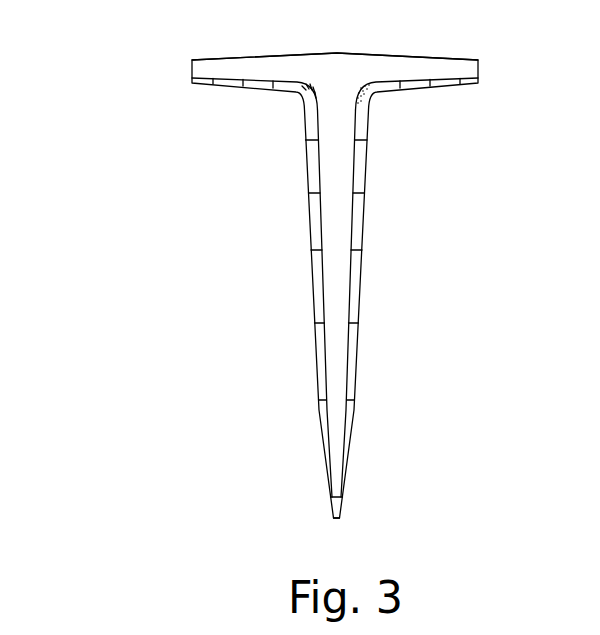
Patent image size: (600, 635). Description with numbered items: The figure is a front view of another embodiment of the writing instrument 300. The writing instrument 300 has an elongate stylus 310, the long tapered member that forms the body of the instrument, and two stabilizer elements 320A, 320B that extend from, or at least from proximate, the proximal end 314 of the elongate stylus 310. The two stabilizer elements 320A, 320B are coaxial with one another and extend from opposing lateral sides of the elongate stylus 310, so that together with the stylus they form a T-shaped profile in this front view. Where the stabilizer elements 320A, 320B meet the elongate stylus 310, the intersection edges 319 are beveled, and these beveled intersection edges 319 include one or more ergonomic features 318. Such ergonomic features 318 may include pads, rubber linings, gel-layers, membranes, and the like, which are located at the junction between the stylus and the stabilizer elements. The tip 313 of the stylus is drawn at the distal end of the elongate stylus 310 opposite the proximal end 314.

The writing instrument 300 is at (116, 41).
The elongate stylus 310 is at (338, 229).
The tip 313 is at (340, 508).
The proximal end 314 is at (341, 52).
The ergonomic features 318 is at (376, 94).
The intersection edges 319 is at (298, 96).
The stabilizer element 320A is at (232, 68).
The stabilizer element 320B is at (434, 68).